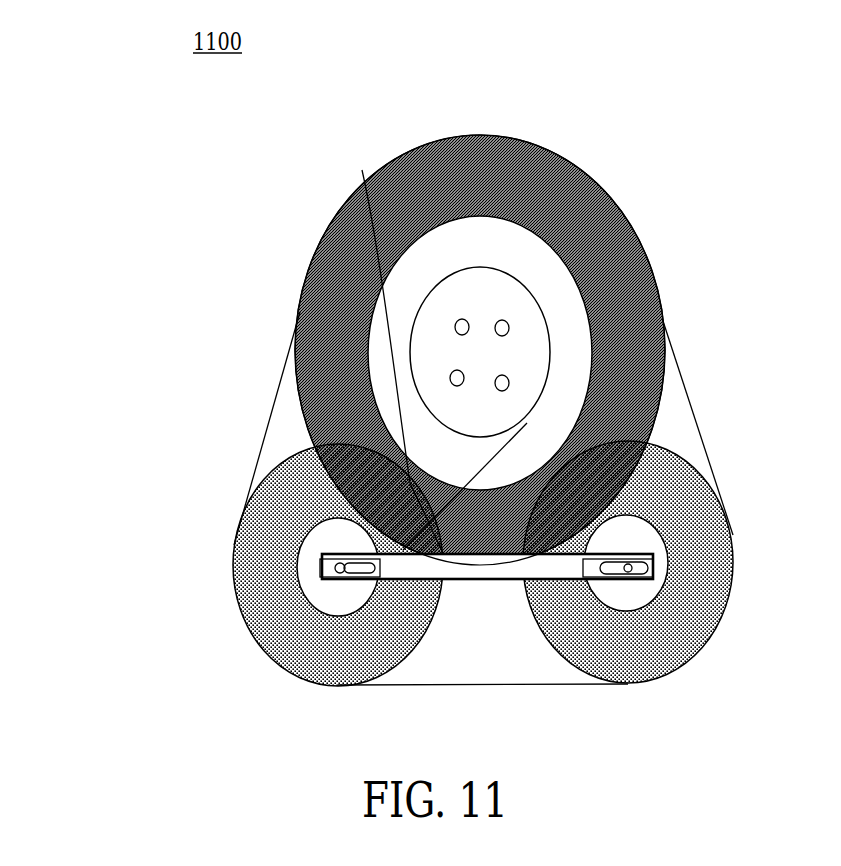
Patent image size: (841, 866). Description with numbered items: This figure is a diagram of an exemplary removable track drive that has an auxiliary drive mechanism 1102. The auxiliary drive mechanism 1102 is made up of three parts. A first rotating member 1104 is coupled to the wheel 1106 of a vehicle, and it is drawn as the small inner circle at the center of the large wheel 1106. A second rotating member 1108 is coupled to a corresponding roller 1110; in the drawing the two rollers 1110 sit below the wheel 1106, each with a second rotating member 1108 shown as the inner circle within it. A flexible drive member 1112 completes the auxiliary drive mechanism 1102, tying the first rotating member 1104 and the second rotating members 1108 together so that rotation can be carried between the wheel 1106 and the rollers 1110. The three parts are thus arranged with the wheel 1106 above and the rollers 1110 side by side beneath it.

The auxiliary drive mechanism 1102 is at (322, 370).
The first rotating member 1104 is at (498, 272).
The wheel 1106 is at (332, 220).
The second rotating member 1108 is at (323, 618).
The roller 1110 is at (232, 582).
The flexible drive member 1112 is at (362, 423).